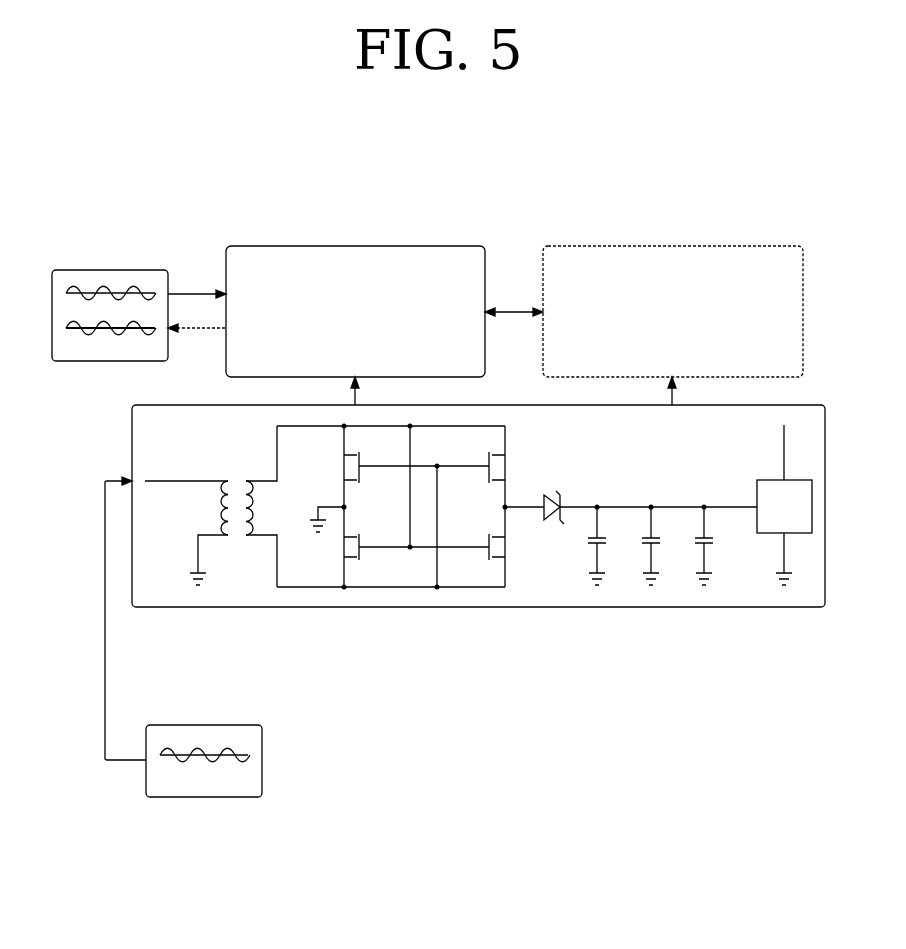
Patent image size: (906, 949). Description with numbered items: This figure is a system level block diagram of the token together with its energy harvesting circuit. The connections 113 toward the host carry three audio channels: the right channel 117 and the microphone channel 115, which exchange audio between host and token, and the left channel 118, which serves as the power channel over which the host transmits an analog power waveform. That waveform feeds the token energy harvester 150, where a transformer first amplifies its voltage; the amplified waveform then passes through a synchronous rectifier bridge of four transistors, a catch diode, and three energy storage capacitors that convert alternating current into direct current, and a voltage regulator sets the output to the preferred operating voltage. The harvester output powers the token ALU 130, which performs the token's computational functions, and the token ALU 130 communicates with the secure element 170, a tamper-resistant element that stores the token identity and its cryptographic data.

The signal source 113 is at (157, 538).
The right channel 117 is at (107, 302).
The microphone channel 115 is at (107, 334).
The left channel (power channel) 118 is at (201, 765).
The token ALU 130 is at (355, 311).
The secure element 170 is at (673, 311).
The token energy harvester 150 is at (478, 519).